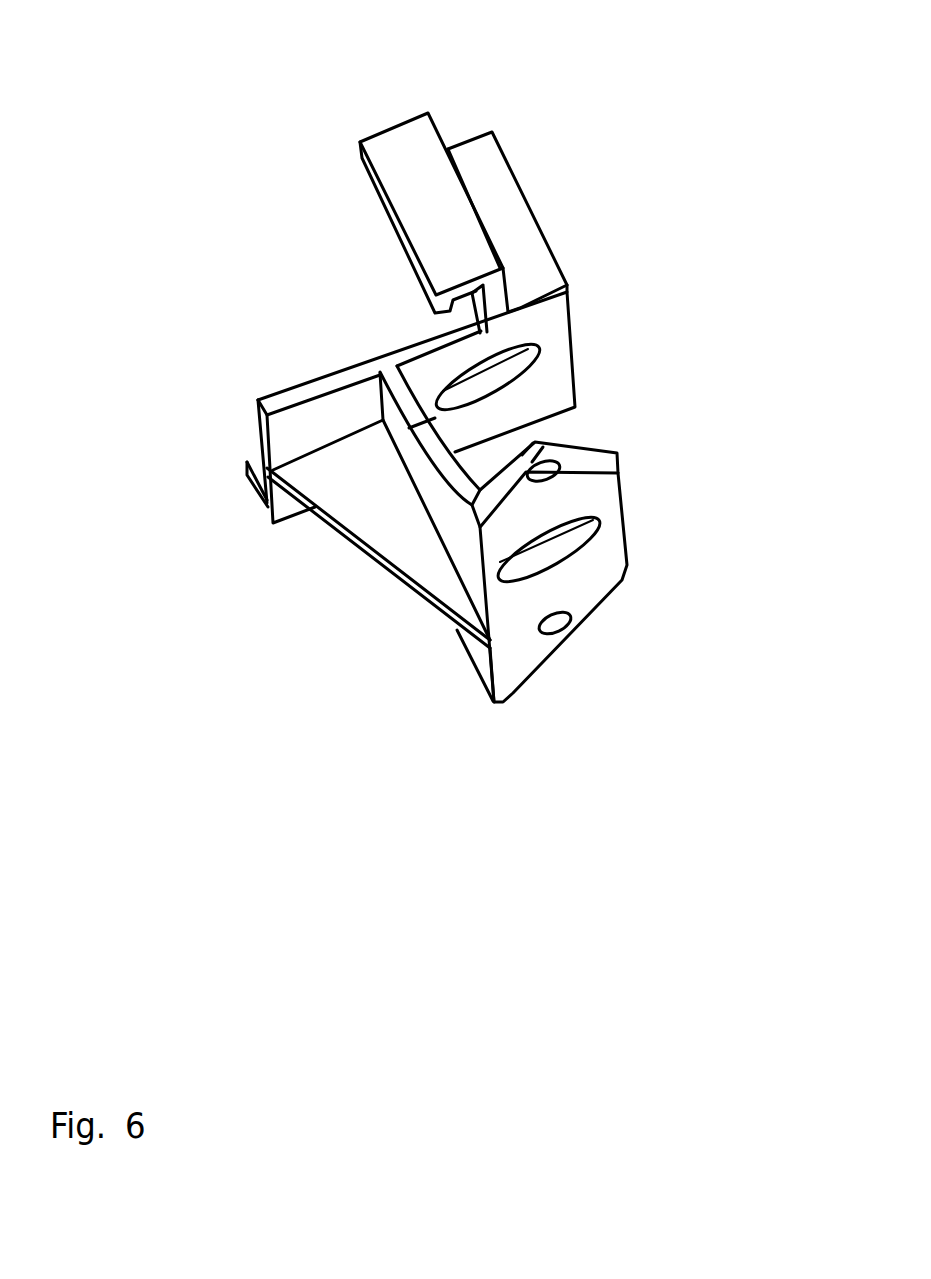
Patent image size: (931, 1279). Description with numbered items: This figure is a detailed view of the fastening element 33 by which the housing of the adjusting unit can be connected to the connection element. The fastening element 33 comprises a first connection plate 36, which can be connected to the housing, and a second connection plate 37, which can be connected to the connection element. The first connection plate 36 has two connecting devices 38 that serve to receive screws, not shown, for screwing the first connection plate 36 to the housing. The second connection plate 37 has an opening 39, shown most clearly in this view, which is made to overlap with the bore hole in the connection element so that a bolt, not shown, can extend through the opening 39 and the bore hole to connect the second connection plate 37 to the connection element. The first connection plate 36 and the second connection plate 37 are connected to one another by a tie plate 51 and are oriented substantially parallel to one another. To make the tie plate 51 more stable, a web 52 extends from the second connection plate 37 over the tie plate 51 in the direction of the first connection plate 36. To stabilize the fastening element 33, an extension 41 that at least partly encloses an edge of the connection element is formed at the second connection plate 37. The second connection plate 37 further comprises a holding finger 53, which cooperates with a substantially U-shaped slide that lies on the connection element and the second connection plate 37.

The fastening element 33 is at (453, 456).
The first connection plate 36 is at (607, 486).
The second connection plate 37 is at (262, 485).
The connecting devices 38 is at (557, 475).
The opening 39 is at (523, 366).
The extension 41 is at (291, 433).
The tie plate 51 is at (463, 532).
The web 52 is at (393, 536).
The holding finger 53 is at (410, 158).